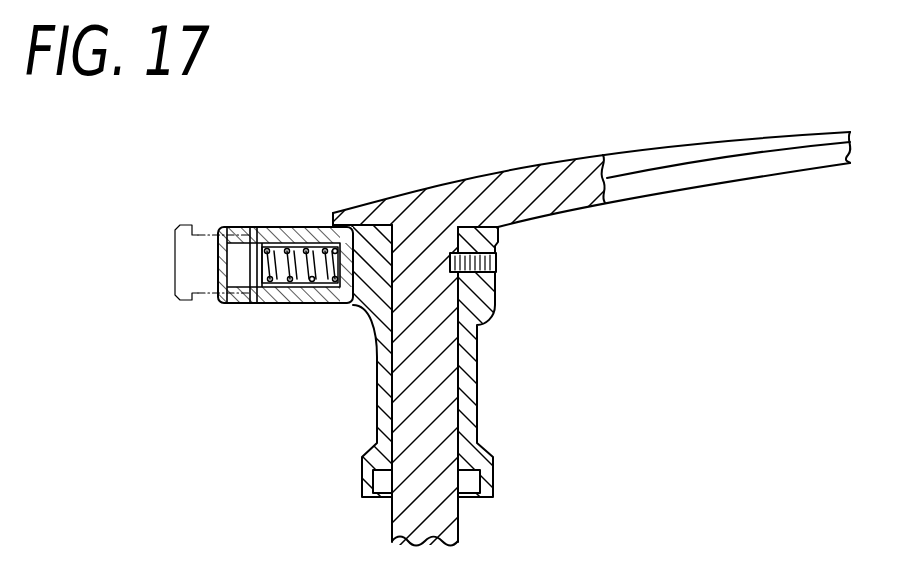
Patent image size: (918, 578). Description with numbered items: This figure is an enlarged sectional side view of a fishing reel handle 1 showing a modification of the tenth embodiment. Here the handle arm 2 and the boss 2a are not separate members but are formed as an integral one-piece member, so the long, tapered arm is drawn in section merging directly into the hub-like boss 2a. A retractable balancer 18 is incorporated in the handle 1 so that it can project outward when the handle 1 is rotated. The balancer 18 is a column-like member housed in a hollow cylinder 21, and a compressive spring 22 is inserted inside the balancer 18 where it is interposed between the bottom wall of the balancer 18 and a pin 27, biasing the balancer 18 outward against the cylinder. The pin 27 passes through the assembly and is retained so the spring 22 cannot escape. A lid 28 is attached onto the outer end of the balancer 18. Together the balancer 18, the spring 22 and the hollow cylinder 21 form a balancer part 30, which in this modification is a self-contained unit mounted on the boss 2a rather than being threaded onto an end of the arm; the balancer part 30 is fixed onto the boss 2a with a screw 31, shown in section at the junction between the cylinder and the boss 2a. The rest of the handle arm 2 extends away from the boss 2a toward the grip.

The handle 1 is at (452, 290).
The handle arm 2 is at (721, 143).
The boss 2a is at (437, 325).
The balancer 18 is at (259, 260).
The hollow cylinder 21 is at (288, 228).
The spring 22 is at (294, 271).
The pin 27 is at (256, 303).
The lid 28 is at (218, 270).
The balancer part 30 is at (385, 393).
The screw 31 is at (500, 258).